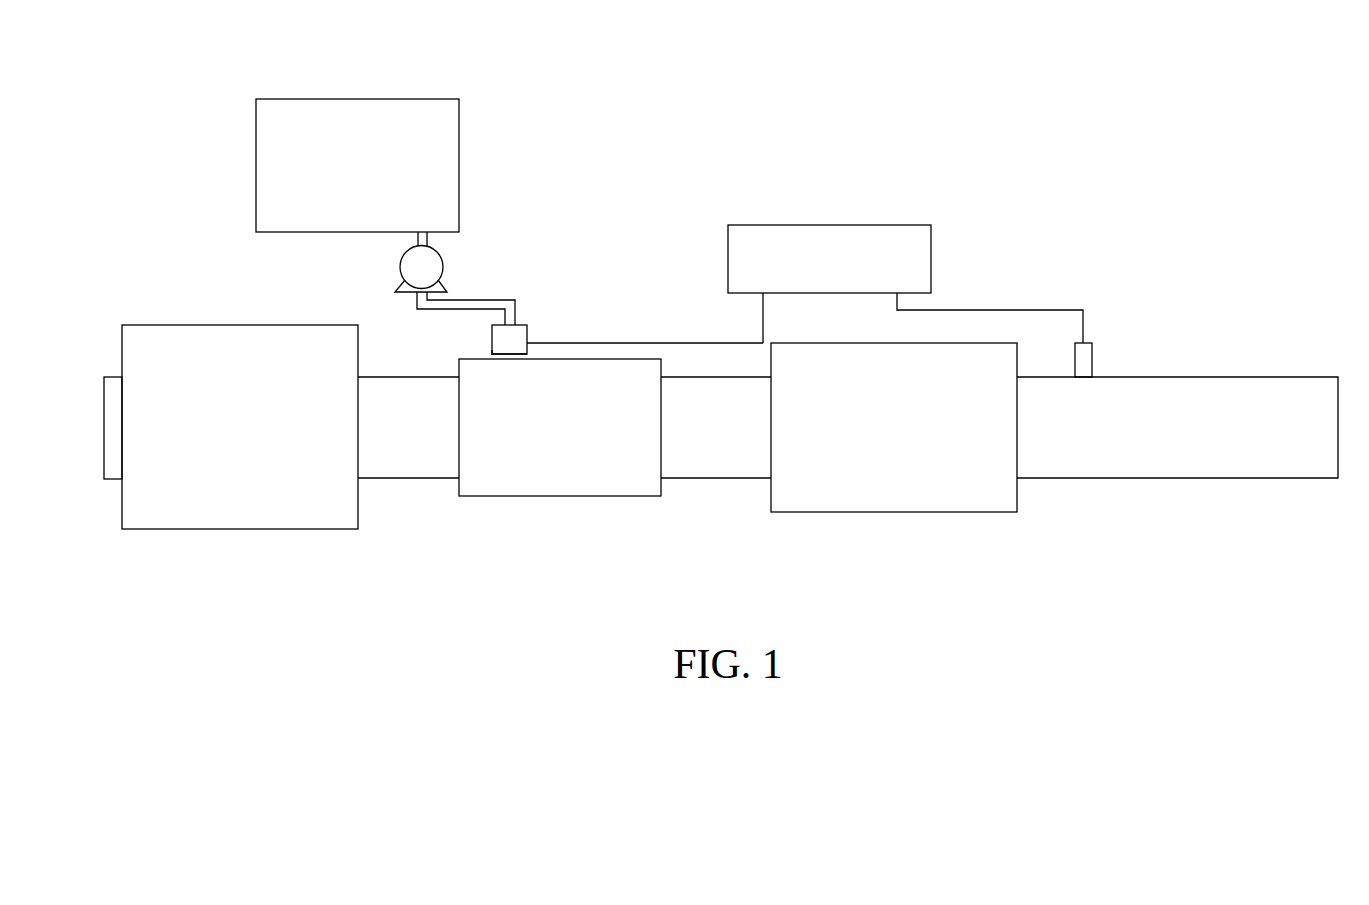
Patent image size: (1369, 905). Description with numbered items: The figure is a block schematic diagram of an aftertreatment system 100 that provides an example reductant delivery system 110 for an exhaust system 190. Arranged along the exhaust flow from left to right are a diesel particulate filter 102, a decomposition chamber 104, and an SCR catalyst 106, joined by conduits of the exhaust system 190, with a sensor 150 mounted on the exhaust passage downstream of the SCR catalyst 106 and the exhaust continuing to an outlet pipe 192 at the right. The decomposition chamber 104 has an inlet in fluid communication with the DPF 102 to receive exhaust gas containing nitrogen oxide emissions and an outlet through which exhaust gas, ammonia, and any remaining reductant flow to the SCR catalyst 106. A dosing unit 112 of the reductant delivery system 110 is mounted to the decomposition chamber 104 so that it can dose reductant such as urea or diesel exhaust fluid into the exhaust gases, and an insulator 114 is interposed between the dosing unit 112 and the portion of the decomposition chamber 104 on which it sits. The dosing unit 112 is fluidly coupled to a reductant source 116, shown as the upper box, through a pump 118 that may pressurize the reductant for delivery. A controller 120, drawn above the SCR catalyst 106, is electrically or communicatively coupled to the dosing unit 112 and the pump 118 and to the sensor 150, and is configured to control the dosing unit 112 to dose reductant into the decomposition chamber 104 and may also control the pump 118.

The aftertreatment system 100 is at (972, 285).
The diesel particulate filter 102 is at (268, 530).
The decomposition chamber 104 is at (655, 358).
The SCR catalyst 106 is at (900, 513).
The reductant delivery system 110 is at (620, 268).
The dosing unit 112 is at (527, 337).
The insulator 114 is at (492, 352).
The reductant source 116 is at (421, 99).
The pump 118 is at (400, 267).
The controller 120 is at (817, 224).
The sensor 150 is at (1112, 352).
The exhaust system 190 is at (449, 566).
The tailpipe 192 is at (1260, 485).